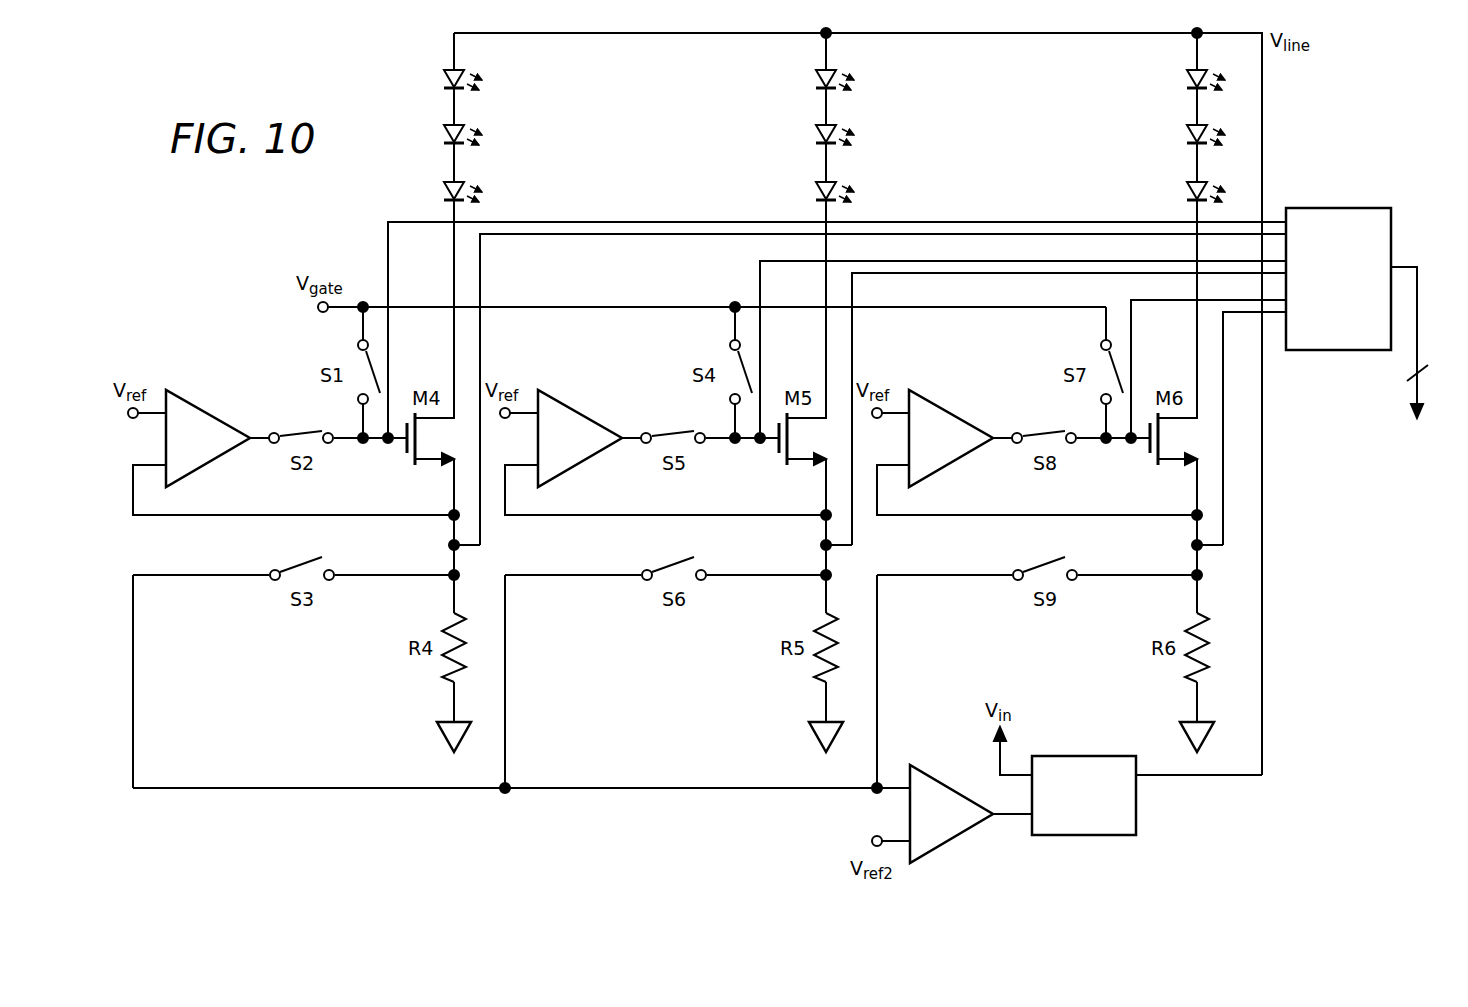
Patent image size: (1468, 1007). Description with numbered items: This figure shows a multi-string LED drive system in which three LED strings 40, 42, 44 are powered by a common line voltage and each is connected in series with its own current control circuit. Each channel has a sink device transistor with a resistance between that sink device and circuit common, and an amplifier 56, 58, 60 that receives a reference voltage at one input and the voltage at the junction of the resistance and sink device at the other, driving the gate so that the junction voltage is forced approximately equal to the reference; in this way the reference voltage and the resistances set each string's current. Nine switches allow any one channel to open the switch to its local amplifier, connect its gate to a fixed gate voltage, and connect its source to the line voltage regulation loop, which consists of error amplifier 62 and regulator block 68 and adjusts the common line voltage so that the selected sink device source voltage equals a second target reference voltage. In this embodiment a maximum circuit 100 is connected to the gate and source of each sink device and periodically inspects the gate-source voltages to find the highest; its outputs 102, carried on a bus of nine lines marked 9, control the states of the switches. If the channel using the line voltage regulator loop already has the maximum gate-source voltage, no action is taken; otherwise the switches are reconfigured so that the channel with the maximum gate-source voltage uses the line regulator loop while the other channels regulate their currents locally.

The LED string 40 is at (428, 121).
The LED string 42 is at (806, 117).
The LED string 44 is at (1177, 117).
The amplifier 56 is at (200, 466).
The amplifier 58 is at (585, 449).
The amplifier 60 is at (956, 449).
The error amplifier 62 is at (936, 778).
The line voltage regulation loop element 68 is at (1136, 810).
The maximum circuit 100 is at (1328, 207).
The outputs 102 is at (1405, 266).
The switch control bus 9 is at (1408, 375).